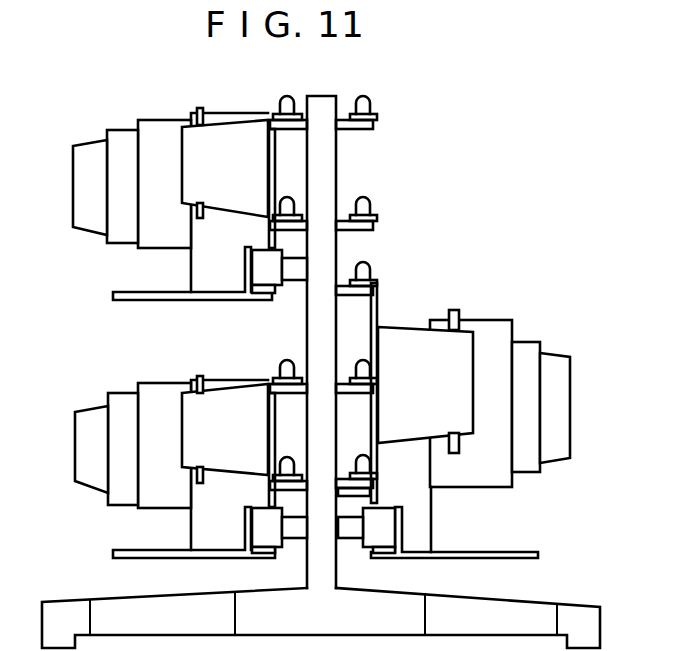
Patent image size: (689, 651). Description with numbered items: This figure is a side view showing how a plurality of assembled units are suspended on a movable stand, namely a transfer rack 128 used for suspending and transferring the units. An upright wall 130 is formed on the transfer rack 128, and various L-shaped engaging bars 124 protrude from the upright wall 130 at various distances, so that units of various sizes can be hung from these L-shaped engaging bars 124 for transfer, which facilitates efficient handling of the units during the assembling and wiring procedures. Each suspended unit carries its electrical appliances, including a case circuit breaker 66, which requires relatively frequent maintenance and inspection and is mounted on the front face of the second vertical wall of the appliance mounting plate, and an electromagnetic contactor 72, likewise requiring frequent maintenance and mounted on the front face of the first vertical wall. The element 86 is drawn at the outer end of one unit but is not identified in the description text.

The case circuit breaker 66 is at (166, 126).
The electromagnetic contactor 72 is at (242, 128).
The end cap 86 is at (557, 407).
The L-shaped engaging bars 124 is at (366, 98).
The transfer rack 128 is at (528, 616).
The upright wall 130 is at (330, 165).